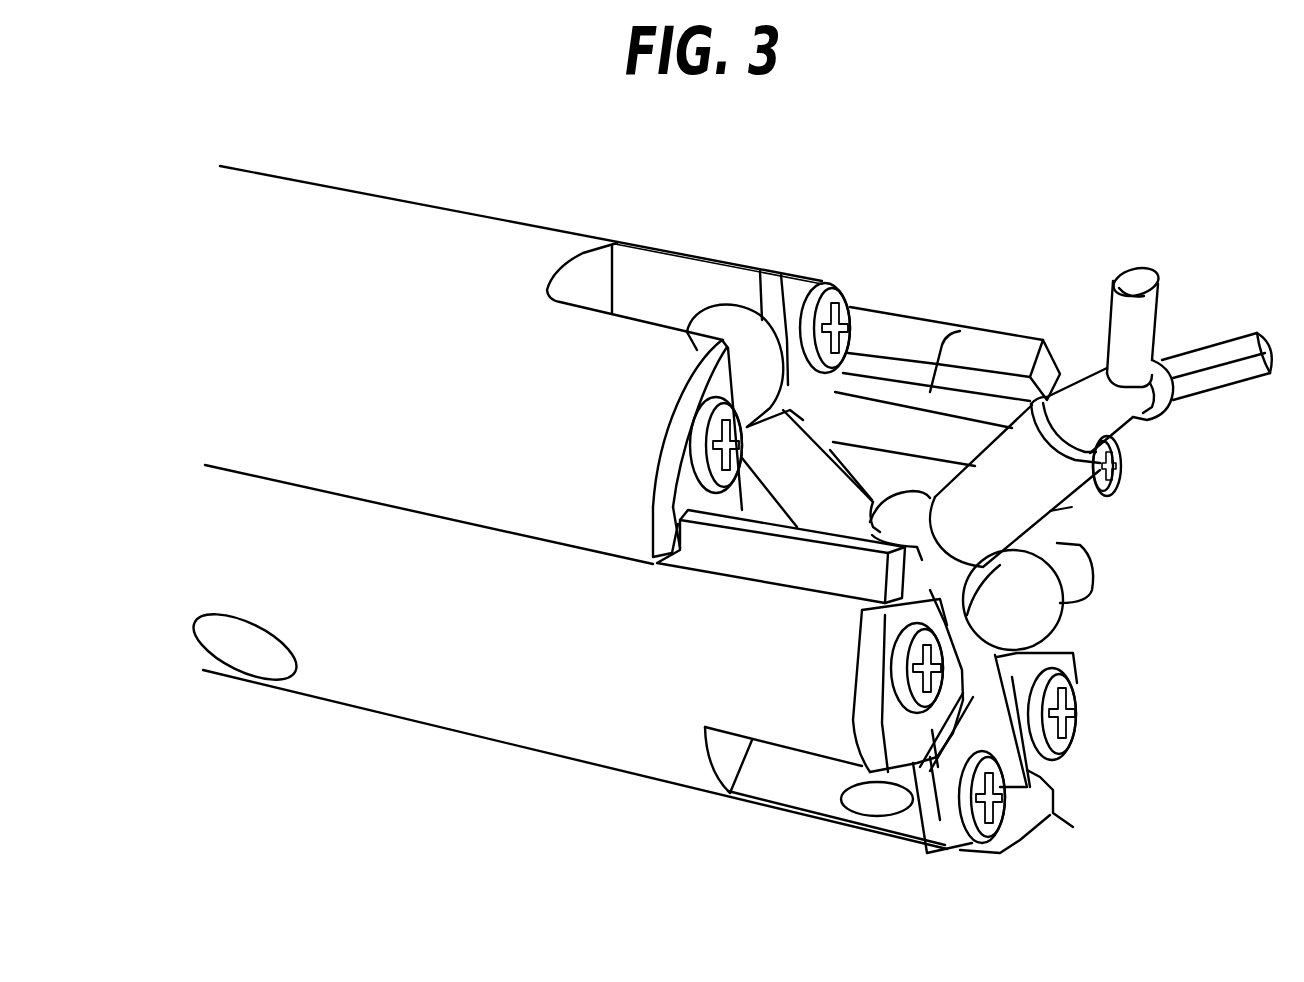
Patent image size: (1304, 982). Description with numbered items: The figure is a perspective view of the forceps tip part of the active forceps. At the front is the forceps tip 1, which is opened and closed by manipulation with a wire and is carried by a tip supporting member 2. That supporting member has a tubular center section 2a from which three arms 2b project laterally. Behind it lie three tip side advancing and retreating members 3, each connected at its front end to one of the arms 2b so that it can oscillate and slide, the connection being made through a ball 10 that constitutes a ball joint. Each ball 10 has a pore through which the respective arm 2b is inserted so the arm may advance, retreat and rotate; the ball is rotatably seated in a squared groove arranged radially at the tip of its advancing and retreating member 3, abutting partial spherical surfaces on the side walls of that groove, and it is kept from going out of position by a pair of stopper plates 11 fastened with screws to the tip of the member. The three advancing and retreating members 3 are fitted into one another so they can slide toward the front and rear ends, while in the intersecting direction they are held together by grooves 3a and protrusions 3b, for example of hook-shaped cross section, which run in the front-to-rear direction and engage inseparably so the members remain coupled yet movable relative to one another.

The forceps tip 1 is at (1160, 417).
The tip supporting member 2 is at (1097, 472).
The tubular center section 2a is at (1063, 540).
The arm 2b is at (825, 458).
The tip side advancing and retreating member 3 is at (508, 216).
The groove 3a is at (930, 393).
The protrusion 3b is at (697, 417).
The ball 10 is at (740, 325).
The stopper plate 11 is at (699, 370).